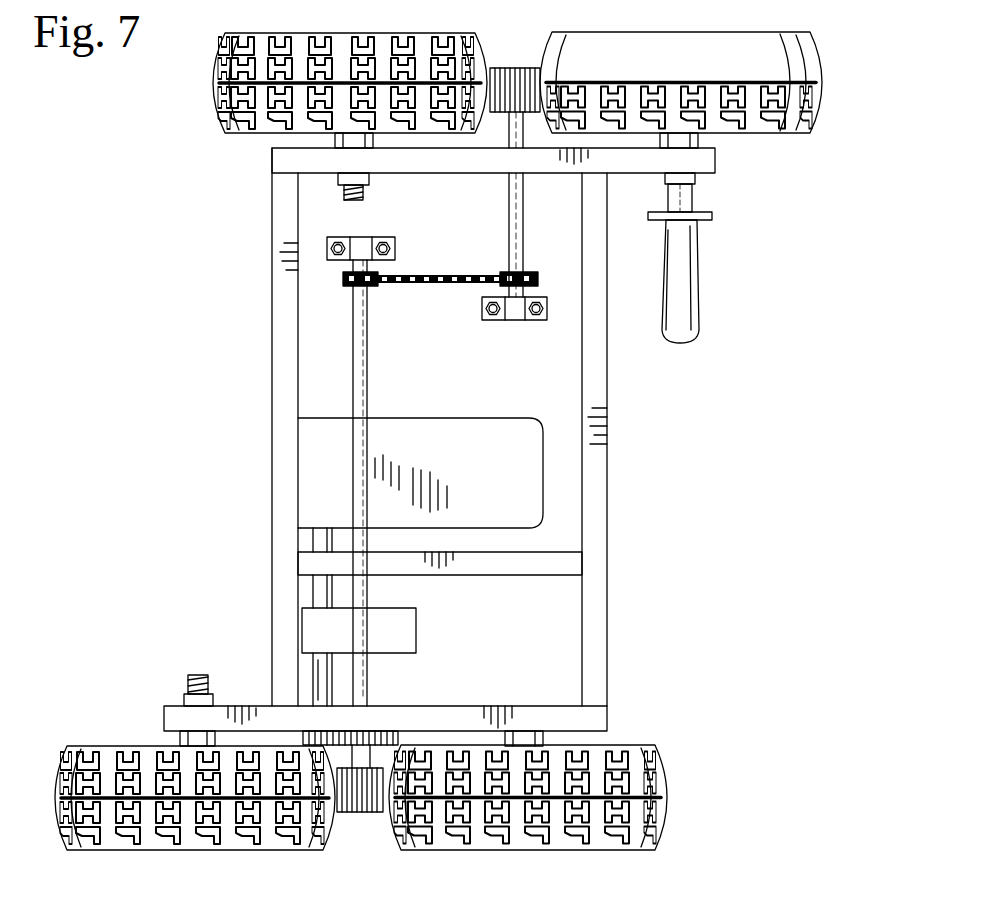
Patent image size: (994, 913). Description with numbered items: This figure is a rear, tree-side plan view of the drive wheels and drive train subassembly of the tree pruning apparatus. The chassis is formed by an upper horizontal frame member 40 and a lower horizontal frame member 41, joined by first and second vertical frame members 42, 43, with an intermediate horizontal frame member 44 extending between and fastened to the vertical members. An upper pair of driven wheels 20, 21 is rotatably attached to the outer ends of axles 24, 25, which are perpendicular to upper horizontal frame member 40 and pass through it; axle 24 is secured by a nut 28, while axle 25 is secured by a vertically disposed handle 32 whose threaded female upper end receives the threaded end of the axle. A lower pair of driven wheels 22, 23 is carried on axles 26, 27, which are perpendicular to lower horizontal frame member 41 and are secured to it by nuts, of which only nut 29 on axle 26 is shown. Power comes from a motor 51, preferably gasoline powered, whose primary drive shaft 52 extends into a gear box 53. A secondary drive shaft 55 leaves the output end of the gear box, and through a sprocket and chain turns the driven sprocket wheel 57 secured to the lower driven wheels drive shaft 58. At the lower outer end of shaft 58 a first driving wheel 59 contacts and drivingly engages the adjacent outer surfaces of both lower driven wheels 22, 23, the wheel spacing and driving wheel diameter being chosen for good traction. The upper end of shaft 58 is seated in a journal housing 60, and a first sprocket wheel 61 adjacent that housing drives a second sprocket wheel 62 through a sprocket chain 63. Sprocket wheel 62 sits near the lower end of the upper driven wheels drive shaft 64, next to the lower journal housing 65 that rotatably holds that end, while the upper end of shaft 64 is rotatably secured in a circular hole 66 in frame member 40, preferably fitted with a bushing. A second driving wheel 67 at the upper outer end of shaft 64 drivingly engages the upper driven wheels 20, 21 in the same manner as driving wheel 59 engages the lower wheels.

The upper driven wheel 20 is at (215, 62).
The upper driven wheel 21 is at (820, 118).
The lower driven wheel 22 is at (58, 797).
The lower driven wheel 23 is at (665, 826).
The axle 24 is at (300, 148).
The axle 25 is at (665, 140).
The axle 26 is at (180, 738).
The axle 27 is at (545, 740).
The nut 28 is at (357, 178).
The nut 29 is at (184, 700).
The handle 32 is at (700, 255).
The upper horizontal frame member 40 is at (448, 173).
The lower horizontal frame member 41 is at (518, 705).
The first vertical frame member 42 is at (280, 300).
The second vertical frame member 43 is at (607, 275).
The intermediate horizontal frame member 44 is at (505, 575).
The motor 51 is at (420, 473).
The primary drive shaft 52 is at (313, 590).
The gear box 53 is at (416, 640).
The secondary drive shaft 55 is at (318, 672).
The driven sprocket wheel 57 is at (370, 735).
The lower driven wheels drive shaft 58 is at (367, 430).
The first driving wheel 59 is at (357, 812).
The journal housing 60 is at (360, 243).
The first sprocket wheel 61 is at (350, 290).
The second sprocket wheel 62 is at (540, 258).
The sprocket chain 63 is at (415, 286).
The upper driven wheels drive shaft 64 is at (509, 240).
The lower journal housing 65 is at (497, 320).
The circular hole 66 is at (523, 175).
The second driving wheel 67 is at (532, 68).